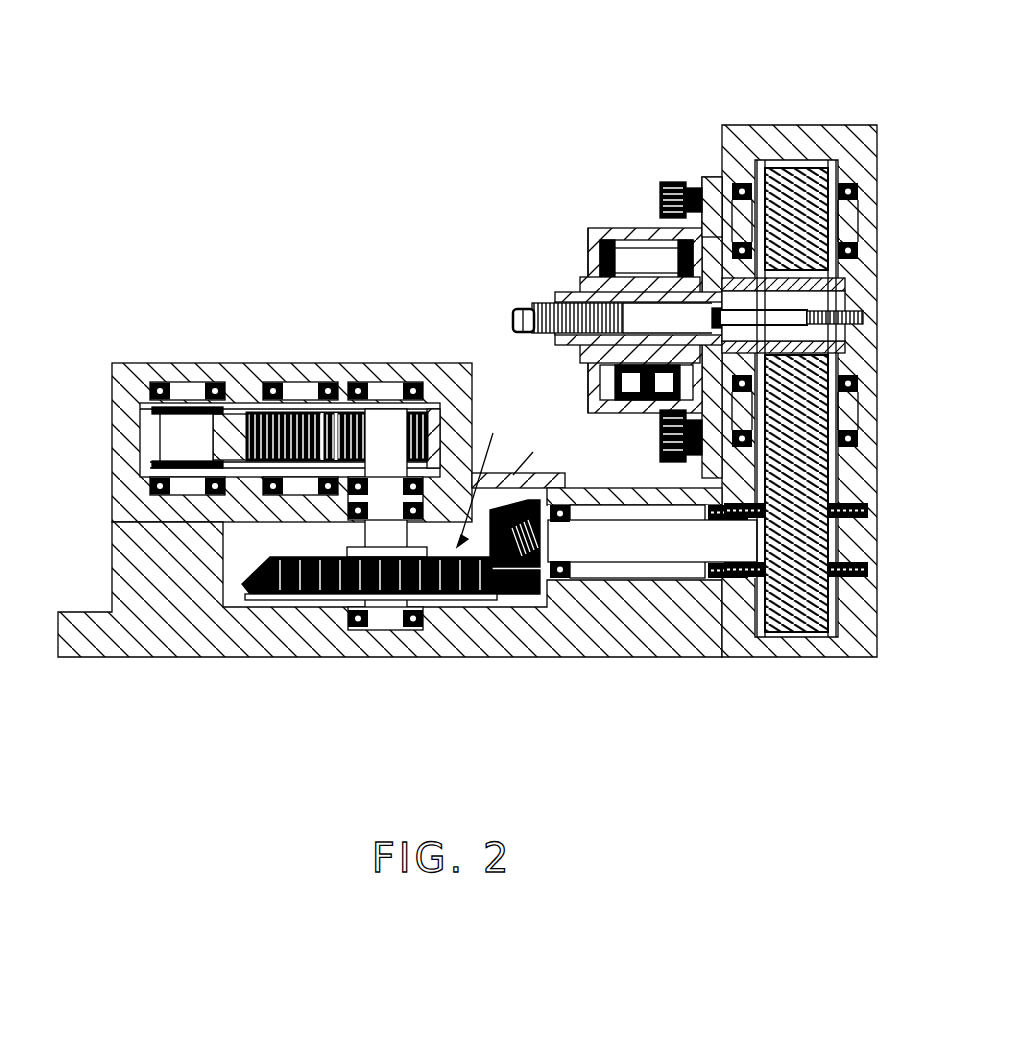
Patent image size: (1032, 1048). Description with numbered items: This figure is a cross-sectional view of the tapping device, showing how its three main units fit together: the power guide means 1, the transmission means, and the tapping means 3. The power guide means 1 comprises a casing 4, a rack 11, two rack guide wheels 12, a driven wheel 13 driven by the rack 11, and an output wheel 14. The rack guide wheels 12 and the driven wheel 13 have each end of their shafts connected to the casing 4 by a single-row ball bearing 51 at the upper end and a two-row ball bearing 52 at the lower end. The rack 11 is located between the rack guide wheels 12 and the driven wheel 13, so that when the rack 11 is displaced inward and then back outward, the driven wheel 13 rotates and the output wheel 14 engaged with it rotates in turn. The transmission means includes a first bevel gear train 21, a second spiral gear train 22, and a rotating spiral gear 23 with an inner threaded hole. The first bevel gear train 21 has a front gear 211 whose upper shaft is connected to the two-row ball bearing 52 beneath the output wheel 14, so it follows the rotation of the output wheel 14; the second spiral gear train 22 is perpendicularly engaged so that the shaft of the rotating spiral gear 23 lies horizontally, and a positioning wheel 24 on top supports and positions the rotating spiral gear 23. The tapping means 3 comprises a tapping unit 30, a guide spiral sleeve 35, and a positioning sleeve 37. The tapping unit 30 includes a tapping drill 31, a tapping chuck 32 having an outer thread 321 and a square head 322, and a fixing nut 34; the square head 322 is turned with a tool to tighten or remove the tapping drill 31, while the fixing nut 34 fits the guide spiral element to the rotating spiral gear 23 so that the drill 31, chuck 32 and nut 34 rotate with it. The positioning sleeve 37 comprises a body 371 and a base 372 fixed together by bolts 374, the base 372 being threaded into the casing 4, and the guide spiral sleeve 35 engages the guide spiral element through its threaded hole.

The power guide means 1 is at (151, 431).
The tapping means 3 is at (622, 239).
The casing 4 is at (112, 363).
The rack 11 is at (255, 414).
The rack guide wheels 12 is at (173, 437).
The driven wheel 13 is at (272, 413).
The output wheel 14 is at (376, 420).
The first bevel gear train 21 is at (515, 592).
The front gear 211 is at (305, 594).
The second spiral gear train 22 is at (830, 611).
The rotating spiral gear 23 is at (848, 349).
The positioning wheel 24 is at (805, 172).
The tapping unit 30 is at (836, 302).
The tapping drill 31 is at (858, 316).
The tapping chuck 32 is at (604, 240).
The outer thread 321 is at (514, 312).
The square head 322 is at (541, 303).
The fixing nut 34 is at (692, 188).
The guide spiral sleeve 35 is at (580, 278).
The positioning sleeve 37 is at (633, 229).
The body 371 is at (588, 230).
The base 372 is at (716, 176).
The bolts 374 is at (665, 182).
The single-row ball bearing 51 is at (160, 386).
The two-row ball bearing 52 is at (722, 580).